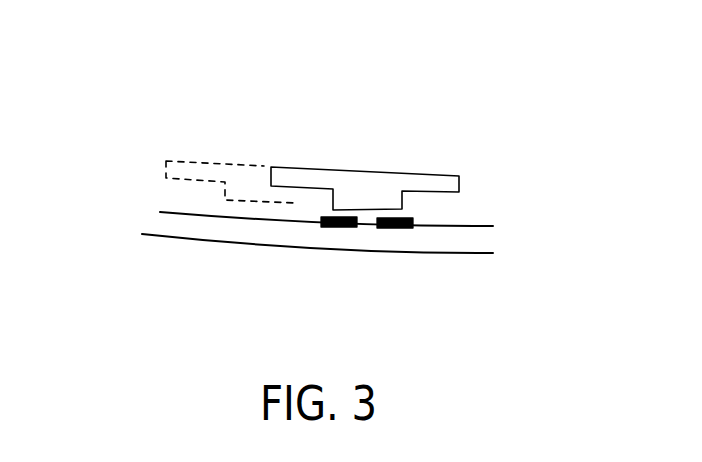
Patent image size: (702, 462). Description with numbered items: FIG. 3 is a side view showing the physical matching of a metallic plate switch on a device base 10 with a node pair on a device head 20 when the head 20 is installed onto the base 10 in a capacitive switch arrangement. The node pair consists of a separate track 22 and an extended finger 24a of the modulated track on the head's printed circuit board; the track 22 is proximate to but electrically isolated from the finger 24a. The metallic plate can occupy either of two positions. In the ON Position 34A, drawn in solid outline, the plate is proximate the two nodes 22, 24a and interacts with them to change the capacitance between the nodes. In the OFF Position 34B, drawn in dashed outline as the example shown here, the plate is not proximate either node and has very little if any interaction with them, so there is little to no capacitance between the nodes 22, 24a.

The base 10 is at (337, 127).
The device head 20 is at (220, 235).
The separate track 22 is at (335, 229).
The extended finger 24a is at (395, 229).
The ON Position 34A is at (387, 180).
The OFF Position 34B is at (253, 172).